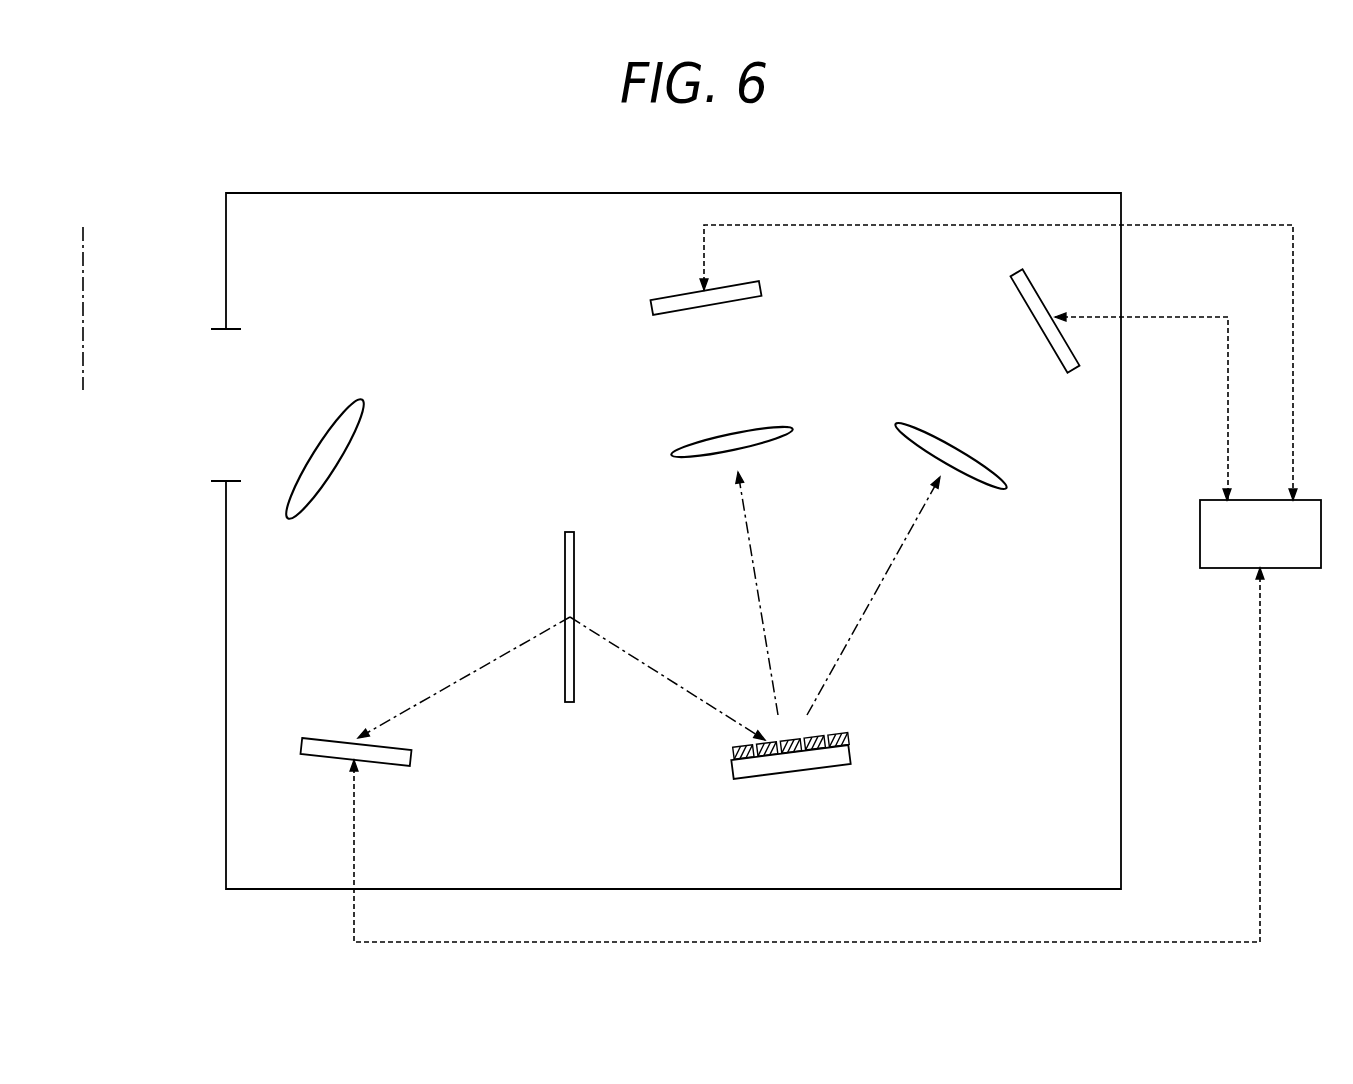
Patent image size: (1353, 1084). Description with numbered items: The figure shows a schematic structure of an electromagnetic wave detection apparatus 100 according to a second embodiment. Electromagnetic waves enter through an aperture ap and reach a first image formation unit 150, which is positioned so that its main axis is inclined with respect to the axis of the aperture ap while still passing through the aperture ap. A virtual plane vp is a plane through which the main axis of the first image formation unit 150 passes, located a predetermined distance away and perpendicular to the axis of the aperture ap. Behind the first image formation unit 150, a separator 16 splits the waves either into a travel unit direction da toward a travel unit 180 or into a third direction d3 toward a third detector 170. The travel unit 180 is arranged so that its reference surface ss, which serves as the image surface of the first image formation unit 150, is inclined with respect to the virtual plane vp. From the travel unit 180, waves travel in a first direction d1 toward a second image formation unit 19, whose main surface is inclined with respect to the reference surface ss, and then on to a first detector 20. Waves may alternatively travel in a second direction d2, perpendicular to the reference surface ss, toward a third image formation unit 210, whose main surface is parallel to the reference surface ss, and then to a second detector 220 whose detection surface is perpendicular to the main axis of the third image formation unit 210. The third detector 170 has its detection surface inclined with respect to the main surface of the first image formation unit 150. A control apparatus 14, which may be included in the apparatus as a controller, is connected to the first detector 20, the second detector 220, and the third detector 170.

The electromagnetic wave detection apparatus 100 is at (530, 193).
The virtual plane vp is at (83, 262).
The aperture ap is at (226, 405).
The first image formation unit 150 is at (359, 398).
The second detector 220 is at (651, 307).
The first detector 20 is at (1014, 291).
The third image formation unit 210 is at (676, 446).
The second image formation unit 19 is at (1005, 478).
The separator 16 is at (570, 702).
The third direction d3 is at (464, 677).
The travel unit direction da is at (667, 678).
The second direction d2 is at (761, 593).
The first direction d1 is at (873, 596).
The third detector 170 is at (410, 759).
The travel unit 180 is at (748, 783).
The reference surface ss is at (822, 757).
The control apparatus 14 is at (1215, 568).